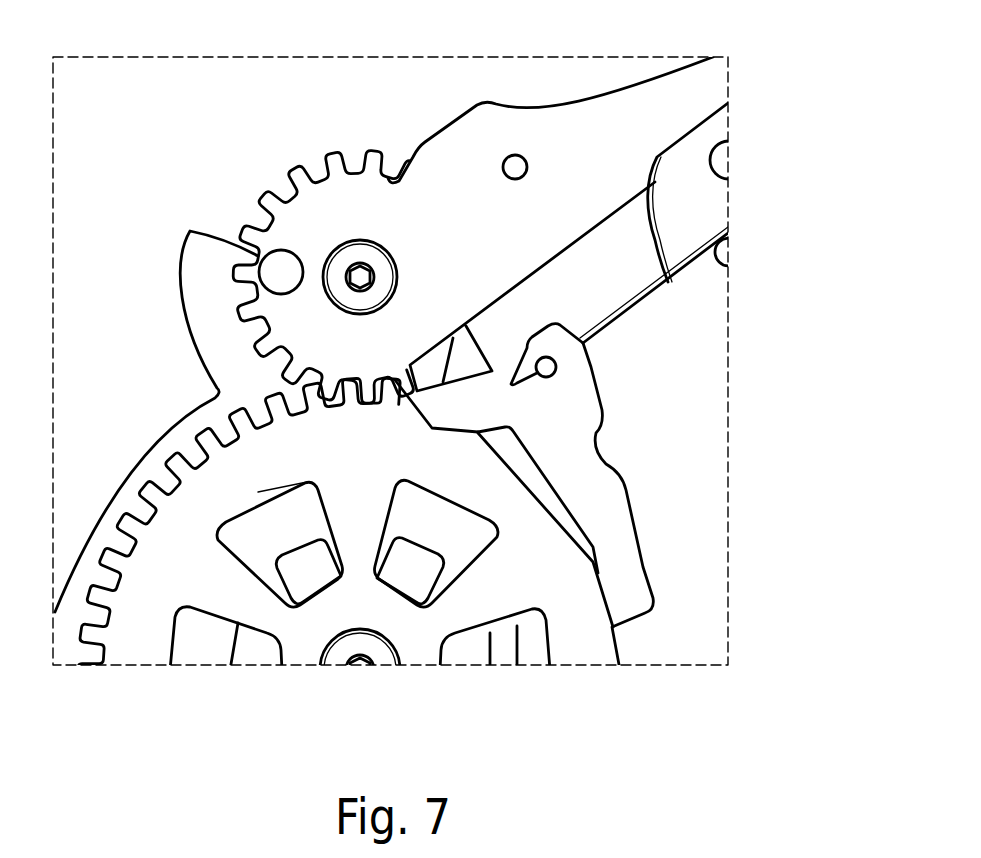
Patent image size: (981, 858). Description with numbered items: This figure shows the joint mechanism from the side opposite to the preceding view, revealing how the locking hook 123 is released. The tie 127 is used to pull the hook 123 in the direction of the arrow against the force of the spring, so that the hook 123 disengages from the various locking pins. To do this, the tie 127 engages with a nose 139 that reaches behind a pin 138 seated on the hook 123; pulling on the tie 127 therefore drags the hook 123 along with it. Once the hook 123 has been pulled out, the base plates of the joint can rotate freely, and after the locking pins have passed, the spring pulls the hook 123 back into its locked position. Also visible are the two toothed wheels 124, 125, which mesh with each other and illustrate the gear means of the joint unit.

The hook 123 is at (556, 443).
The toothed wheel 124 is at (243, 503).
The toothed wheel 125 is at (313, 243).
The tie 127 is at (569, 314).
The pin 138 is at (556, 367).
The nose 139 is at (514, 358).